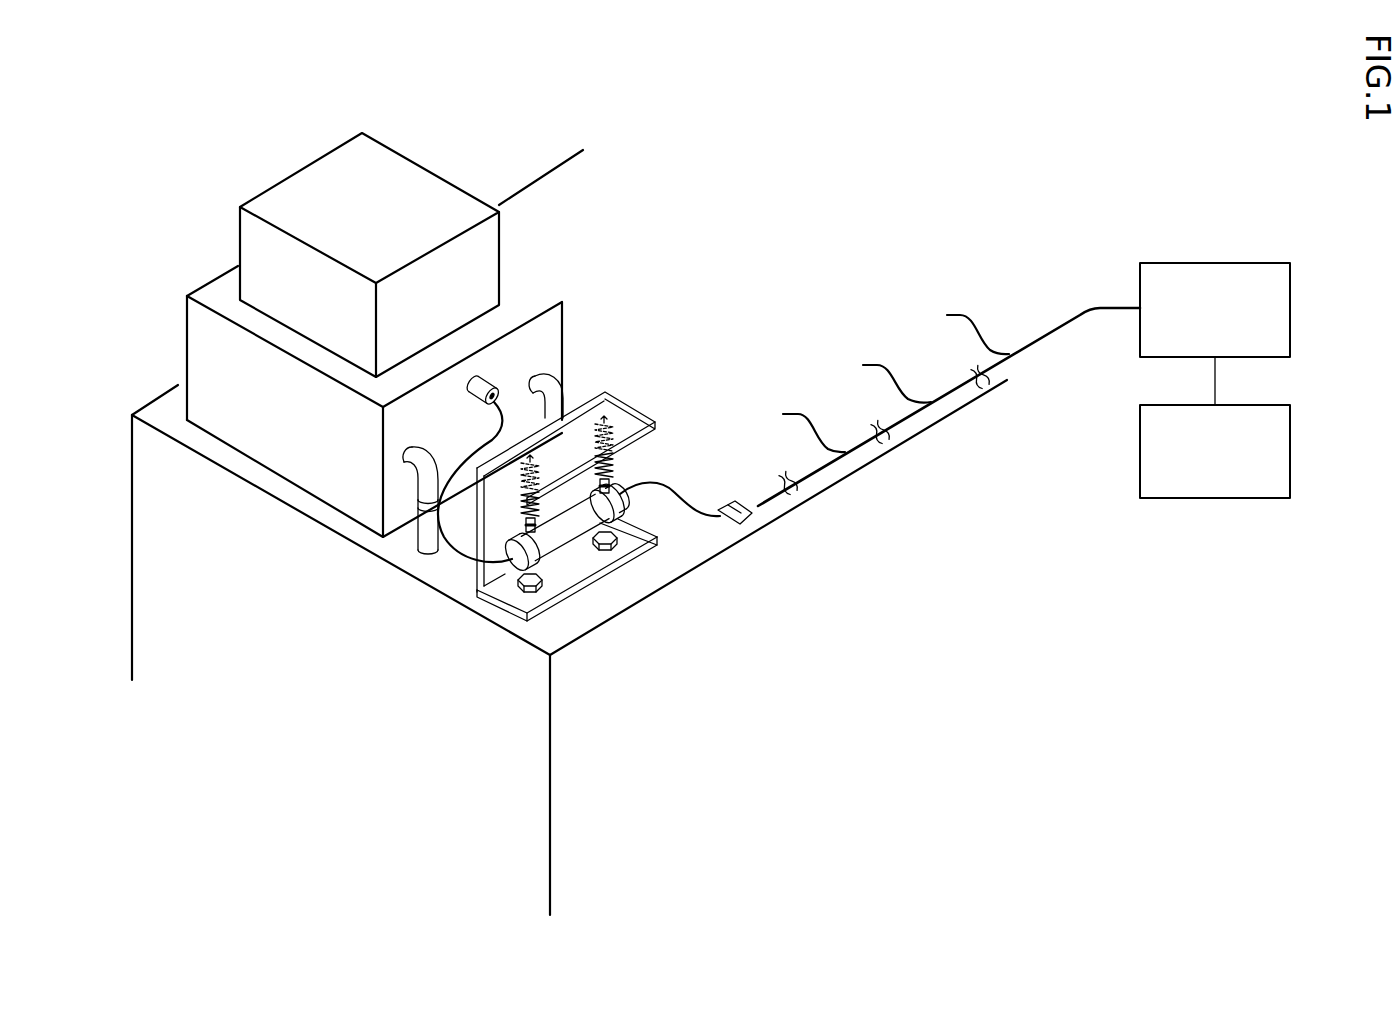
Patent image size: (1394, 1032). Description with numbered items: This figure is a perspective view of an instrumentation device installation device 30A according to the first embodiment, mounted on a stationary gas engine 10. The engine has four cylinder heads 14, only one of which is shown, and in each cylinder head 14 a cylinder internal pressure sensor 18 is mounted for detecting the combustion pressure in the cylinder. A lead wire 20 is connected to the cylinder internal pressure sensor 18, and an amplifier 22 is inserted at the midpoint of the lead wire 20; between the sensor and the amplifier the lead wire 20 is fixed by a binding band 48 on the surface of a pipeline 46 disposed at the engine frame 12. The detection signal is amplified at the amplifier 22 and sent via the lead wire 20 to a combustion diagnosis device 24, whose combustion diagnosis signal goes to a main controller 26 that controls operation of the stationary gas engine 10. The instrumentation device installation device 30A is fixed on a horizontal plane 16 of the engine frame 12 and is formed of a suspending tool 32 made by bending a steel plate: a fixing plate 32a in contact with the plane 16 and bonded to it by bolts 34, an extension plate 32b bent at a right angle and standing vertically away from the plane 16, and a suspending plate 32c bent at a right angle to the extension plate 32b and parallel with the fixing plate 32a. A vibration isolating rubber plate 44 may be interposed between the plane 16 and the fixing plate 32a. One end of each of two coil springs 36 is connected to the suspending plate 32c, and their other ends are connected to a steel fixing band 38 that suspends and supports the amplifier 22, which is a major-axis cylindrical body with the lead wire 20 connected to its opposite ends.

The stationary gas engine 10 is at (264, 158).
The engine frame 12 is at (124, 472).
The cylinder head 14 is at (187, 346).
The plane 16 is at (826, 483).
The cylinder internal pressure sensor 18 is at (492, 382).
The lead wire 20 is at (456, 448).
The amplifier 22 is at (566, 537).
The combustion diagnosis device 24 is at (1291, 303).
The main controller 26 is at (1291, 452).
The instrumentation device installation device 30A is at (526, 516).
The suspending tool 32 is at (498, 540).
The fixing plate 32a is at (510, 598).
The extension plate 32b is at (495, 567).
The suspending plate 32c is at (487, 478).
The bolt 34 is at (543, 592).
The coil spring 36 is at (613, 455).
The fixing band 38 is at (630, 510).
The vibration isolating rubber plate 44 is at (633, 566).
The pipeline 46 is at (415, 540).
The binding band 48 is at (417, 500).